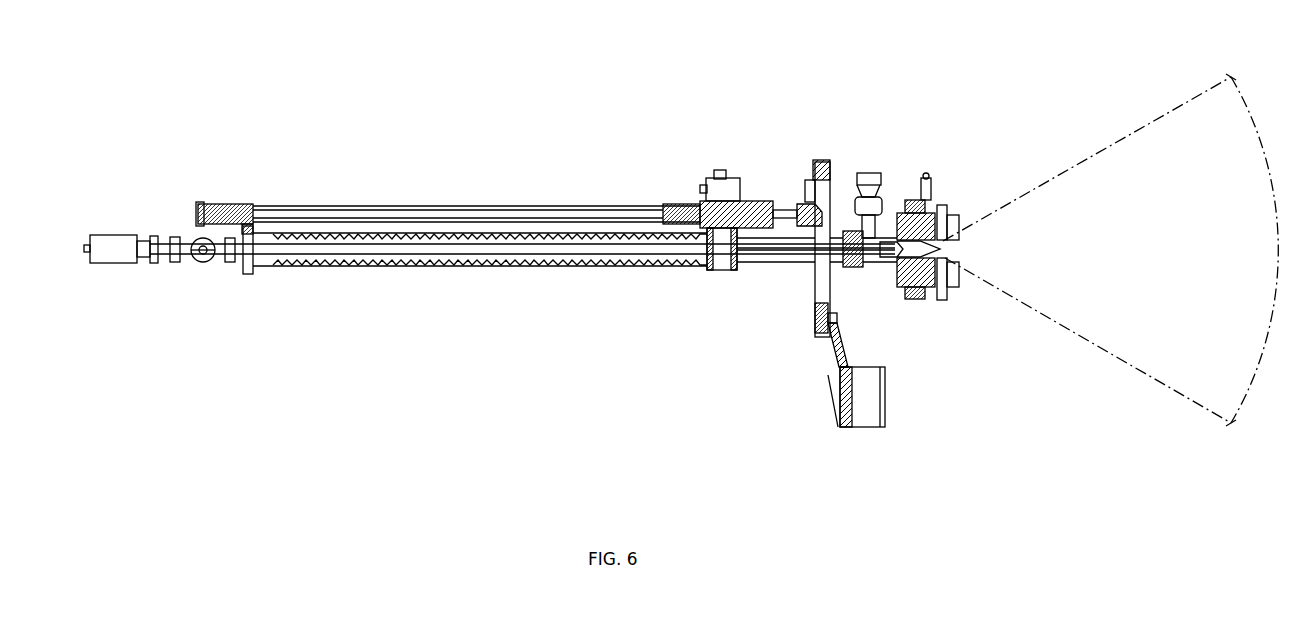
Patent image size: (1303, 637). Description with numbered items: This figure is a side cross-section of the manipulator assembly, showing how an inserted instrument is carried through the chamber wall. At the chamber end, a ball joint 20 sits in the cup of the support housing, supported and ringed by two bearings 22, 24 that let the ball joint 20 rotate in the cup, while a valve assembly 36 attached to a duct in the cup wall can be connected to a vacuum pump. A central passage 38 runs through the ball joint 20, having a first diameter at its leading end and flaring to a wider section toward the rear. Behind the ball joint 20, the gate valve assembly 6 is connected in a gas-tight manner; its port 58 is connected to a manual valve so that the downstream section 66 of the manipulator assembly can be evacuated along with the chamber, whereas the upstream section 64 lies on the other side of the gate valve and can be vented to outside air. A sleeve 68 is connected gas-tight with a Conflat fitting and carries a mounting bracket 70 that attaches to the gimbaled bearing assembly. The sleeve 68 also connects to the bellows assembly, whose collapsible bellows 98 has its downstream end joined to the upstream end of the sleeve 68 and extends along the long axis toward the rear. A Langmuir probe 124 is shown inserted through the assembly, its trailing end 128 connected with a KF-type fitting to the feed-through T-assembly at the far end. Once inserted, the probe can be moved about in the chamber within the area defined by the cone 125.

The upstream section 64 is at (873, 117).
The downstream section 66 is at (943, 130).
The gate valve assembly 6 is at (874, 168).
The port 58 is at (847, 237).
The bearing 24 is at (910, 213).
The valve assembly 36 is at (928, 205).
The bearing 22 is at (940, 217).
The central passage 38 is at (900, 252).
The ball joint 20 is at (905, 265).
The mounting bracket 70 is at (733, 268).
The sleeve 68 is at (777, 258).
The Langmuir probe 124 is at (800, 254).
The collapsible bellows 98 is at (483, 258).
The trailing end 128 is at (115, 266).
The cone 125 is at (1172, 400).